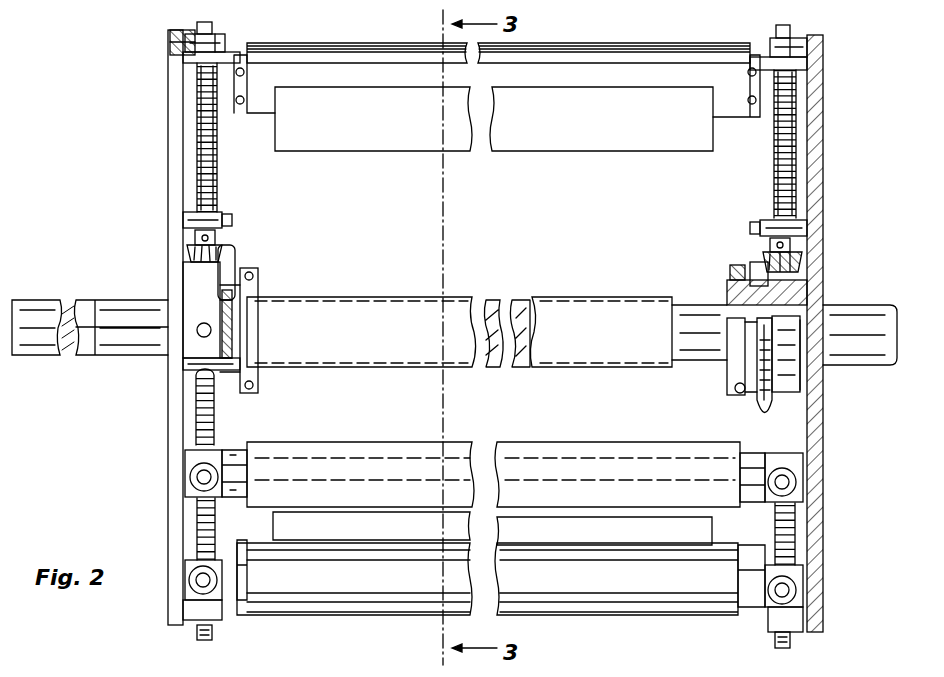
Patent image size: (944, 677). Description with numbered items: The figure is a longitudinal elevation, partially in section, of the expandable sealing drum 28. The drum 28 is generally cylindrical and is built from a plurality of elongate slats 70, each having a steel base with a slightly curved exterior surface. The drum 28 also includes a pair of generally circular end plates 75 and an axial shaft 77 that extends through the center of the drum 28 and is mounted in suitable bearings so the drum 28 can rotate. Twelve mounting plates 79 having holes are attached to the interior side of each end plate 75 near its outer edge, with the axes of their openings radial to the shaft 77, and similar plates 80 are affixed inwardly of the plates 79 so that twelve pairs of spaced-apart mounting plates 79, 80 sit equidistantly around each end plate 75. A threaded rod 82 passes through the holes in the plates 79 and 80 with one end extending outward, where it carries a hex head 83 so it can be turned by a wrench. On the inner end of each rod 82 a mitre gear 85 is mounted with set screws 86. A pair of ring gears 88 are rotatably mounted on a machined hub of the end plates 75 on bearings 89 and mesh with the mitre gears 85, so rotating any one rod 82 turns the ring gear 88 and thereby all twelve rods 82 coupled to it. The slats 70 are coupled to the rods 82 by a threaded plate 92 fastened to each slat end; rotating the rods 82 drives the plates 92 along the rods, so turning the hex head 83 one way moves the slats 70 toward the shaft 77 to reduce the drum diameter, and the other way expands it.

The expandable sealing drum 28 is at (651, 30).
The elongate slat 70 is at (364, 440).
The end plate 75 is at (178, 103).
The axial shaft 77 is at (866, 305).
The mounting plate 79 is at (798, 38).
The mounting plate 80 is at (212, 215).
The threaded rod 82 is at (218, 180).
The hex head 83 is at (196, 22).
The mitre gear 85 is at (188, 253).
The set screw 86 is at (212, 236).
The ring gear 88 is at (236, 262).
The bearing 89 is at (770, 284).
The threaded plate 92 is at (240, 62).